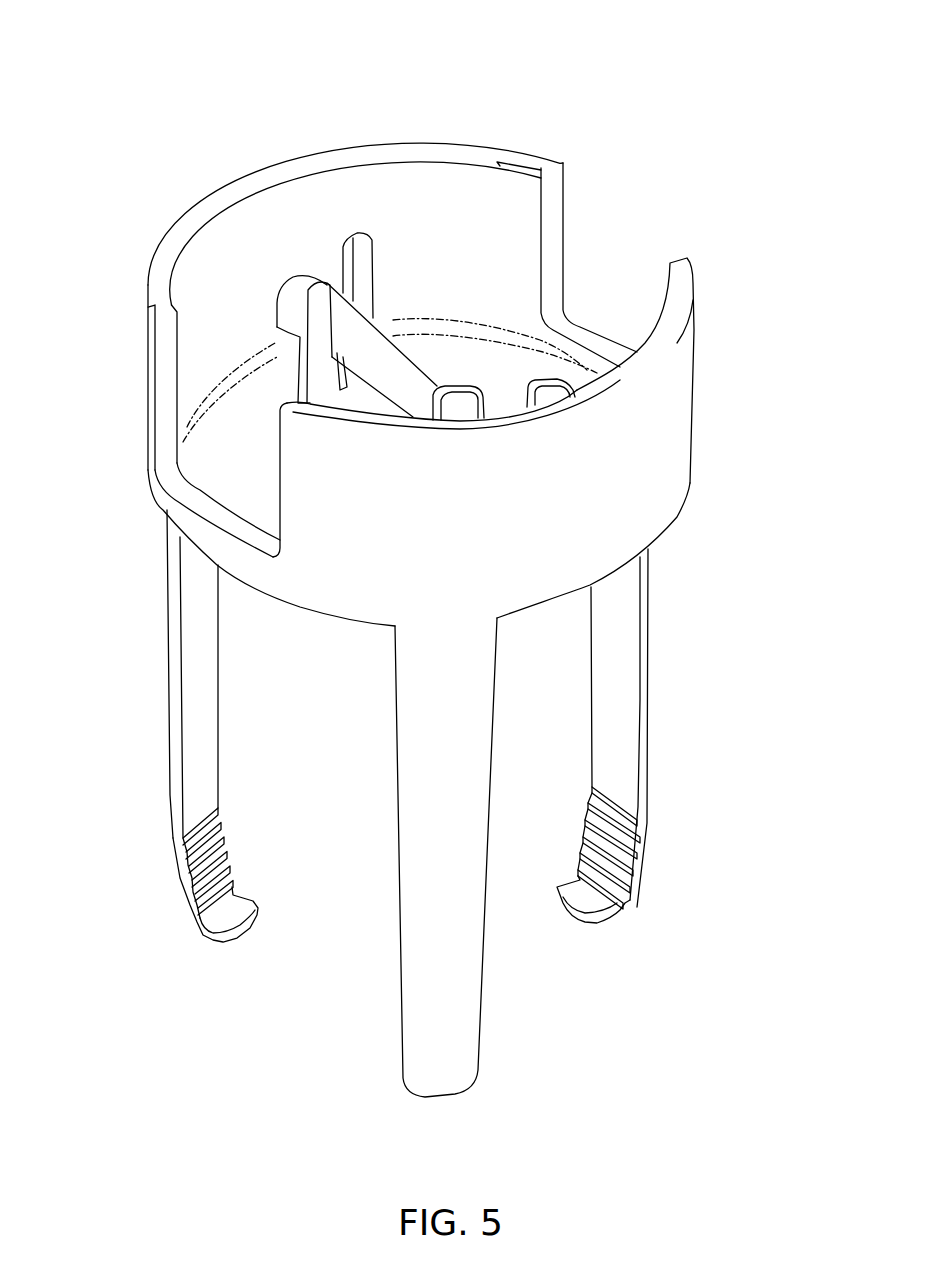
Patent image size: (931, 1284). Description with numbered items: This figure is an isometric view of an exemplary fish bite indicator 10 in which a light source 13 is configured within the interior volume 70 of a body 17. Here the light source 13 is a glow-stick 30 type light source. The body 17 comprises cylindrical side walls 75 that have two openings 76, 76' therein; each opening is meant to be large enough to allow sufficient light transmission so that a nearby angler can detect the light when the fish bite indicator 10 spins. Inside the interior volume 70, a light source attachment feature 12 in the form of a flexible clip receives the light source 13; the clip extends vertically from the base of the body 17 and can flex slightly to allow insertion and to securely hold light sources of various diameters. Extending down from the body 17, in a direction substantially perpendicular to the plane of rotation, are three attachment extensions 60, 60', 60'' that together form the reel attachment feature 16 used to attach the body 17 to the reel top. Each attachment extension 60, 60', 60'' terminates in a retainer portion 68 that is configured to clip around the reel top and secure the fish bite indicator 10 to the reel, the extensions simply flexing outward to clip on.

The fish bite indicator 10 is at (426, 132).
The light source attachment feature 12 is at (352, 232).
The light source 13 is at (417, 357).
The reel attachment feature 16 is at (193, 633).
The body 17 is at (633, 490).
The glow-stick 30 is at (380, 347).
The attachment extension 60 is at (159, 739).
The attachment extension 60' is at (675, 729).
The attachment extension 60'' is at (494, 857).
The retainer portion 68 is at (630, 907).
The interior volume 70 is at (255, 218).
The cylindrical side walls 75 is at (652, 450).
The opening 76 is at (168, 431).
The opening 76' is at (640, 323).